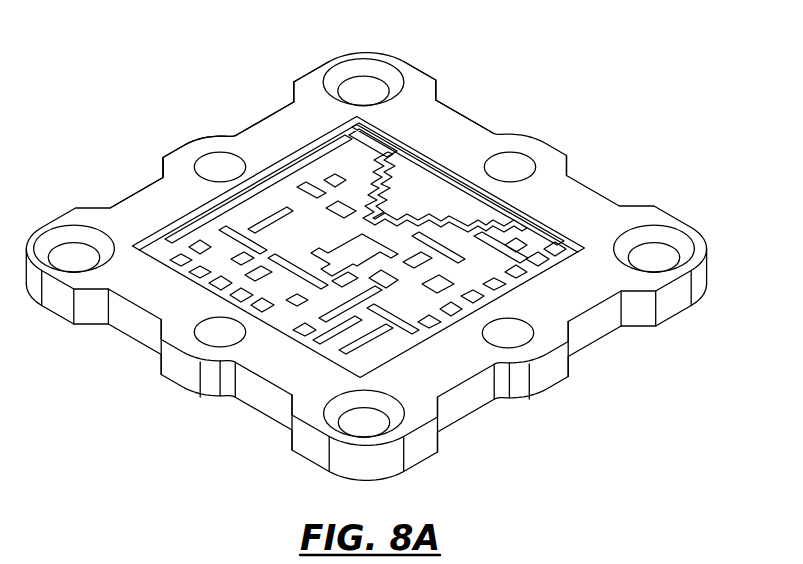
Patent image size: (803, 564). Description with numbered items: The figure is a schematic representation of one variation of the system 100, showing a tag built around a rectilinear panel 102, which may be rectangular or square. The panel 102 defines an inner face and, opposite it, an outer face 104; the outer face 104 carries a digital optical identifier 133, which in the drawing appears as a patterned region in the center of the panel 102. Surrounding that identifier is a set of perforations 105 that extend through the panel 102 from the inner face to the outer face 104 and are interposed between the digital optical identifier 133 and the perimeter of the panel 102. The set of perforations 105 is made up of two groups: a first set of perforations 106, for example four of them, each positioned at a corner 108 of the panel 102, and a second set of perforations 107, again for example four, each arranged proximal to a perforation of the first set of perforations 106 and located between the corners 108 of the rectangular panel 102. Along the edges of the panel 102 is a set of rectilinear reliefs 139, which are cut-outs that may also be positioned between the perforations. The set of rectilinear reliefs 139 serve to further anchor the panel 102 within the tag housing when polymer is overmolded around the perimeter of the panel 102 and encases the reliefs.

The plate assembly 100 is at (700, 95).
The rectilinear panel 102 is at (285, 135).
The outer face 104 is at (162, 205).
The set of perforations 105 is at (647, 290).
The first set of perforations 106 is at (74, 283).
The second set of perforations 107 is at (211, 358).
The corner 108 is at (420, 429).
The digital optical identifier 133 is at (465, 198).
The set of rectilinear reliefs 139 is at (455, 96).